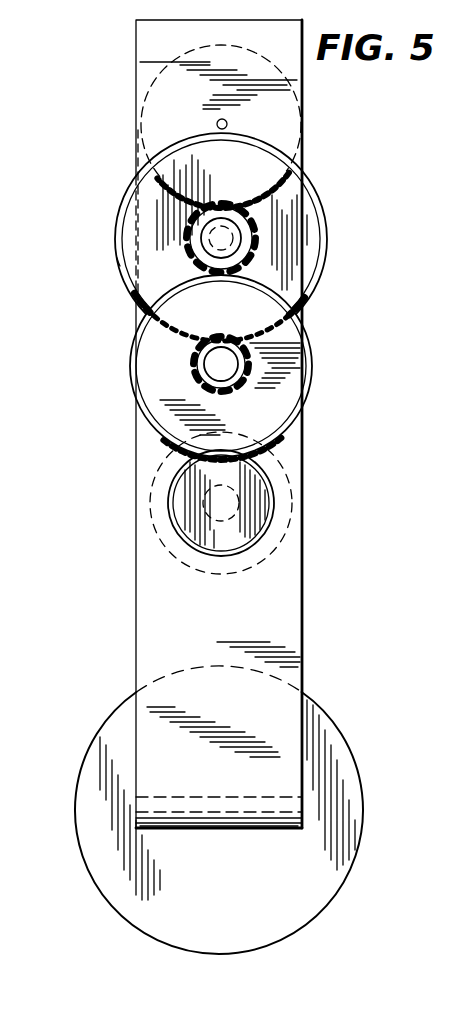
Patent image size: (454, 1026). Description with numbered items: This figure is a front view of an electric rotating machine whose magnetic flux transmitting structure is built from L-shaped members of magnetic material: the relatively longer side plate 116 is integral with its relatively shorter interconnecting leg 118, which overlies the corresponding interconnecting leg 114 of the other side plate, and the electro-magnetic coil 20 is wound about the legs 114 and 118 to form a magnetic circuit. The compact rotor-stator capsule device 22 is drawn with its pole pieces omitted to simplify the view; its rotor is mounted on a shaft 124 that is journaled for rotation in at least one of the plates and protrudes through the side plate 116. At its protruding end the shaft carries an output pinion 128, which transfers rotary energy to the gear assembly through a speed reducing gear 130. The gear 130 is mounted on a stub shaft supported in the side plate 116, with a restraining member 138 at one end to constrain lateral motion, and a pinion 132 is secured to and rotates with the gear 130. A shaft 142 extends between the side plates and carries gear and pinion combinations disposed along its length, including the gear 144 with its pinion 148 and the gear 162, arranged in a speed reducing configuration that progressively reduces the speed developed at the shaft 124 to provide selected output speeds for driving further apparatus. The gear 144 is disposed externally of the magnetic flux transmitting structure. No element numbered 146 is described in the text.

The electro-magnetic coil 20 is at (97, 736).
The compact rotor-stator capsule device 22 is at (163, 533).
The interconnecting leg 114 is at (200, 800).
The side plate 116 is at (135, 479).
The interconnecting leg 118 is at (222, 822).
The shaft 124 is at (292, 502).
The output pinion 128 is at (218, 548).
The speed reducing gear 130 is at (270, 437).
The pinion 132 is at (195, 370).
The restraining member 138 is at (236, 365).
The shaft 142 is at (228, 124).
The gear 144 is at (298, 304).
The pinion 146 is at (240, 251).
The pinion 148 is at (113, 257).
The gear 162 is at (148, 88).